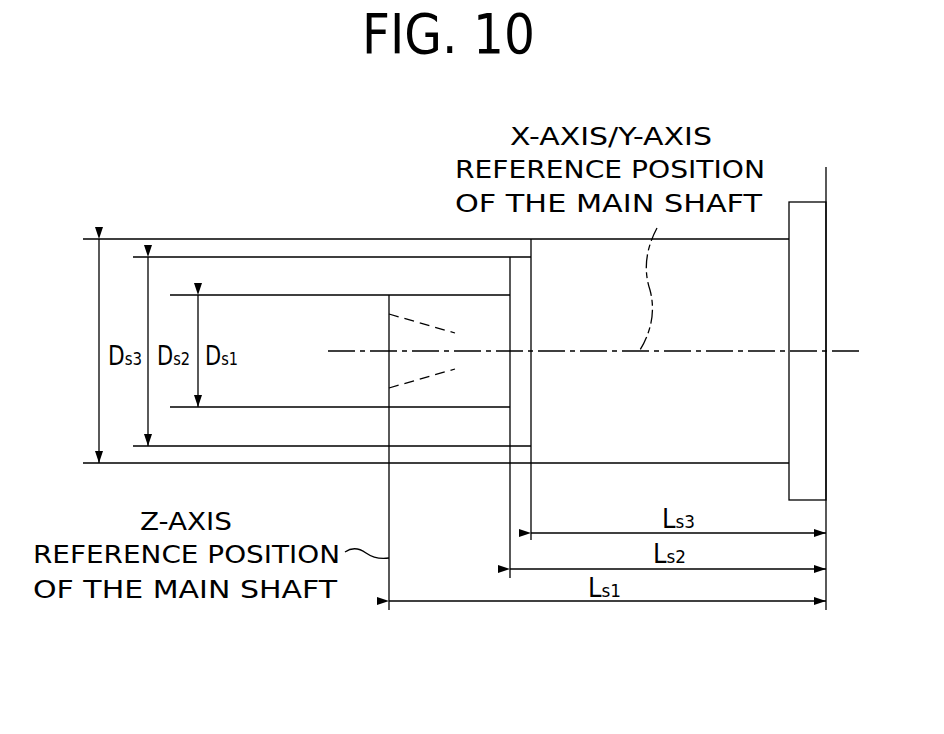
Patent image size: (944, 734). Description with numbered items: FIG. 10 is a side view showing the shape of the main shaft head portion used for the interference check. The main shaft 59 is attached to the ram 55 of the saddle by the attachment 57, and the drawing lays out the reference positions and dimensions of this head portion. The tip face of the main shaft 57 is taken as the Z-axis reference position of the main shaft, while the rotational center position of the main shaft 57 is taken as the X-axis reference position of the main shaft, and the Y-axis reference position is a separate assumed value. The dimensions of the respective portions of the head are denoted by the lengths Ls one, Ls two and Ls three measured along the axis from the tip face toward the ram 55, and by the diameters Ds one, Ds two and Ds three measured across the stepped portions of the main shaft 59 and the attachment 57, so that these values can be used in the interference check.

The ram 55 is at (798, 481).
The attachment 57 is at (610, 453).
The main shaft 59 is at (444, 310).